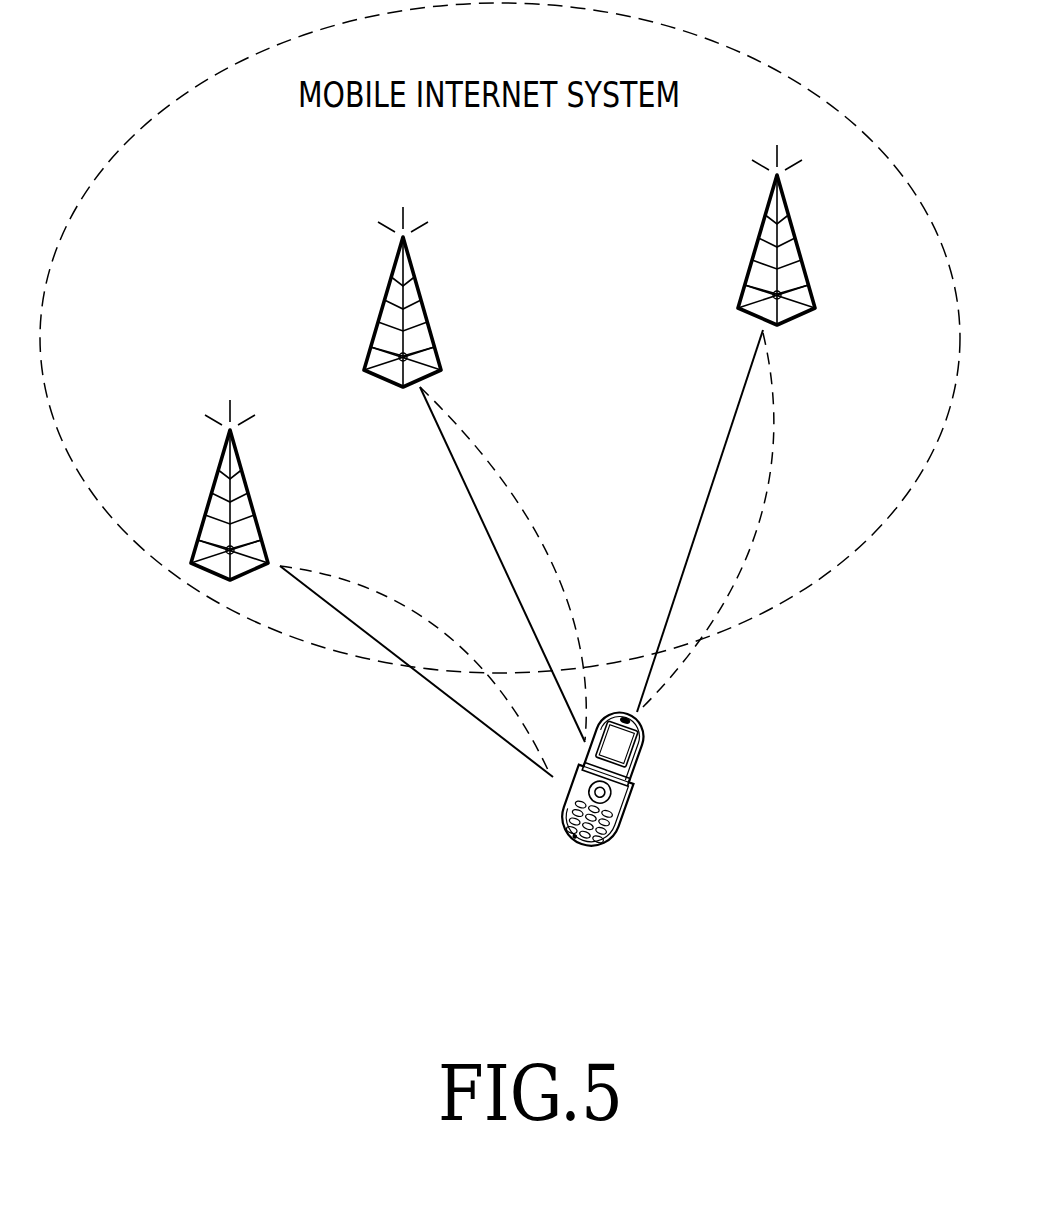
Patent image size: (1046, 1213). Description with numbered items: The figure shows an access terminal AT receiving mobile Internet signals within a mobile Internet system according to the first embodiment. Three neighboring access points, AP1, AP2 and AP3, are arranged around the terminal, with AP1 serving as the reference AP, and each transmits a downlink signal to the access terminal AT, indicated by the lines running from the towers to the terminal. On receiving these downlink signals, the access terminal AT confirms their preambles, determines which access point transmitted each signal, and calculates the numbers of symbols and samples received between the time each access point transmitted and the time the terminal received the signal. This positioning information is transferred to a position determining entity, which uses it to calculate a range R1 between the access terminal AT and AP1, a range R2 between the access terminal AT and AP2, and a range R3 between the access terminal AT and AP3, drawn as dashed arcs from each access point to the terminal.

The access point AP1 is at (238, 448).
The access point AP2 is at (402, 271).
The access point AP3 is at (776, 209).
The access terminal AT is at (621, 778).
The range R1 is at (414, 668).
The range R2 is at (503, 563).
The range R3 is at (707, 521).